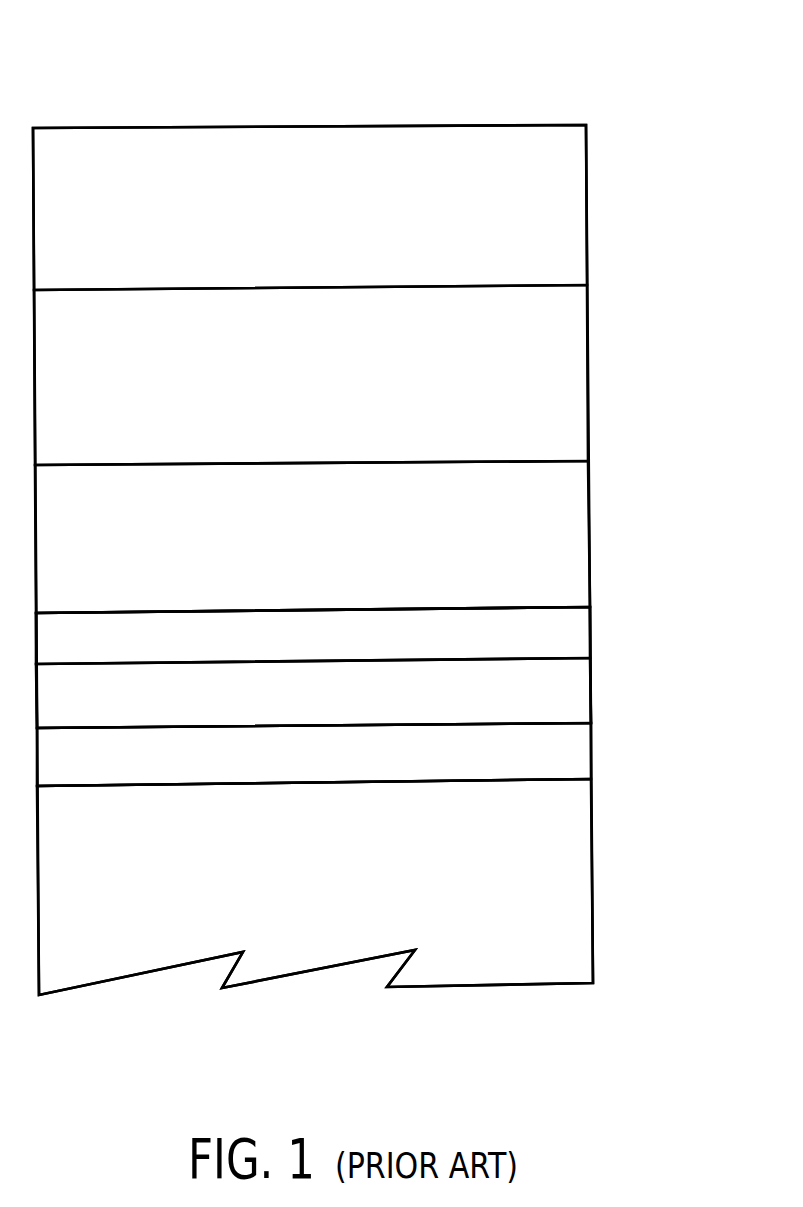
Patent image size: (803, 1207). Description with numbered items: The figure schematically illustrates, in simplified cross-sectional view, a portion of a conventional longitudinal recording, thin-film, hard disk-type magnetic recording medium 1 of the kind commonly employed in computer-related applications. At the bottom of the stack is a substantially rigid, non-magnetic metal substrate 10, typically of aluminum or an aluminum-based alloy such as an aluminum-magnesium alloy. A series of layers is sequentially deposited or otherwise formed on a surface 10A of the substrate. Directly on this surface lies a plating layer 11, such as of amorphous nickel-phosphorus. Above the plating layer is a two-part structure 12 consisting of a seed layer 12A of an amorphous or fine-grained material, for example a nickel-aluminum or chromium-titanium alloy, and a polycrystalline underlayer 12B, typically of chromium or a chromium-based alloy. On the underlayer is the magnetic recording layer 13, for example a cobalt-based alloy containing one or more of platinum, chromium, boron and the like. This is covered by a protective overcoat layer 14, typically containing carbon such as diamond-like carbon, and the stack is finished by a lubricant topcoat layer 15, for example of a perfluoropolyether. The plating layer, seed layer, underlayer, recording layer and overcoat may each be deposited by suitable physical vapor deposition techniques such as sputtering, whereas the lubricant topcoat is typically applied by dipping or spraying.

The magnetic recording medium 1 is at (471, 105).
The non-magnetic metal substrate 10 is at (594, 885).
The surface 10A is at (553, 784).
The plating layer 11 is at (593, 749).
The seed layer and underlayer 12 is at (737, 617).
The seed layer 12A is at (593, 687).
The polycrystalline underlayer 12B is at (593, 631).
The magnetic recording layer 13 is at (592, 529).
The protective overcoat layer 14 is at (591, 363).
The lubricant topcoat layer 15 is at (590, 203).